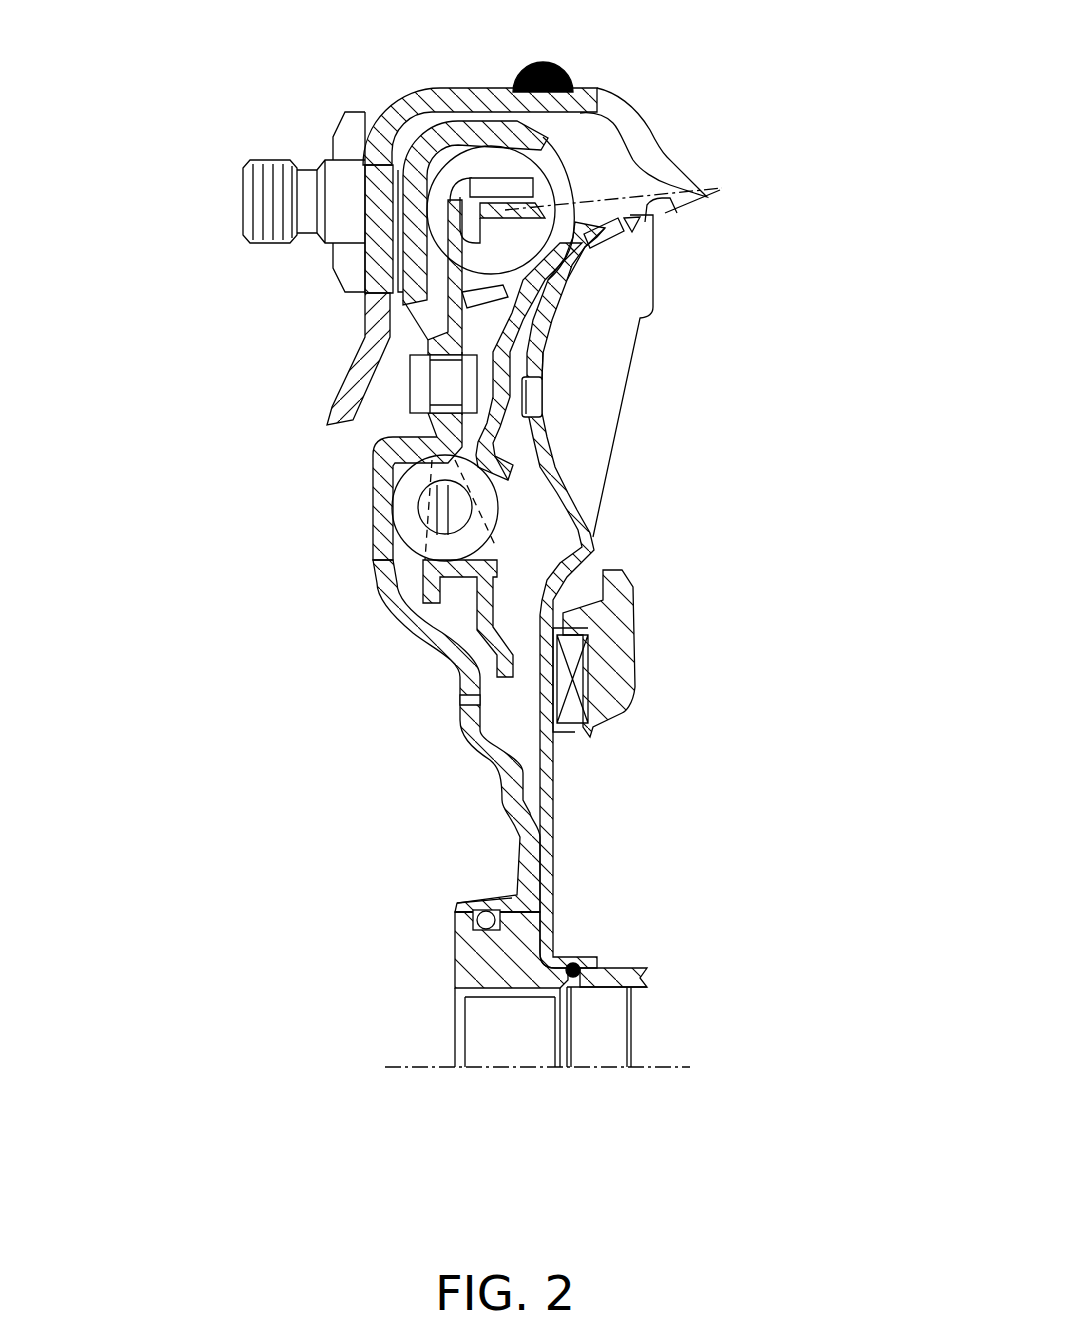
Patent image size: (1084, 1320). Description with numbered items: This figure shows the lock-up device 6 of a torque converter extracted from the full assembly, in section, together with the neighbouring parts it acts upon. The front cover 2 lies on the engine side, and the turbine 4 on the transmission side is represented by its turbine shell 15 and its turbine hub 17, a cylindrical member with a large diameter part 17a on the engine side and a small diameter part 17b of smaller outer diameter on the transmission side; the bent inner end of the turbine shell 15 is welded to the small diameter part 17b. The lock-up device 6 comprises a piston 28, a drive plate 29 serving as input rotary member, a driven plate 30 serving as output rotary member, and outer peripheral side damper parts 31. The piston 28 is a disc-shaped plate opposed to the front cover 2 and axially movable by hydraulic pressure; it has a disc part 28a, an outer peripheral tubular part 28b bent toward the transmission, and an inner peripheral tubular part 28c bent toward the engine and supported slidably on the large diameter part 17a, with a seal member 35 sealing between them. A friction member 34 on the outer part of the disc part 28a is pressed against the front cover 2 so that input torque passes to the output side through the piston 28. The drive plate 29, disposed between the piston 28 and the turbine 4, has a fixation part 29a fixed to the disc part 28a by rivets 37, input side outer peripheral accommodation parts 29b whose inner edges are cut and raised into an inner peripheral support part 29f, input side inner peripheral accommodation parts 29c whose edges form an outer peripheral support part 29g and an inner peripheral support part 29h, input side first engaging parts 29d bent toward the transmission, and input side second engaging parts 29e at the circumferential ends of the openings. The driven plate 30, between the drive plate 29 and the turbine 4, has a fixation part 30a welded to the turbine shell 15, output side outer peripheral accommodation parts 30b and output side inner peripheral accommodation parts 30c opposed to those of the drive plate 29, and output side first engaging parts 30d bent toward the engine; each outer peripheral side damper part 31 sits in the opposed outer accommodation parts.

The front cover 2 is at (367, 360).
The turbine 4 is at (667, 252).
The lock-up device 6 is at (365, 735).
The turbine shell 15 is at (667, 213).
The turbine hub 17 is at (506, 1005).
The large diameter part 17a is at (475, 957).
The small diameter part 17b is at (620, 973).
The piston 28 is at (395, 736).
The disc part 28a is at (373, 473).
The outer peripheral tubular part 28b is at (468, 137).
The inner peripheral tubular part 28c is at (482, 900).
The drive plate 29 is at (470, 328).
The fixation part 29a is at (400, 292).
The input side outer peripheral accommodation part 29b is at (470, 208).
The input side inner peripheral accommodation part 29c is at (344, 508).
The input side first engaging part 29d is at (517, 188).
The input side second engaging part 29e is at (417, 517).
The inner peripheral support part 29f is at (572, 280).
The outer peripheral support part 29g is at (513, 453).
The inner peripheral support part 29h is at (572, 557).
The driven plate 30 is at (510, 435).
The fixation part 30a is at (548, 362).
The output side outer peripheral accommodation part 30b is at (530, 192).
The output side inner peripheral accommodation part 30c is at (651, 451).
The output side first engaging part 30d is at (625, 228).
The outer peripheral side damper part 31 is at (555, 162).
The friction member 34 is at (323, 243).
The seal member 35 is at (470, 920).
The rivet 37 is at (420, 383).